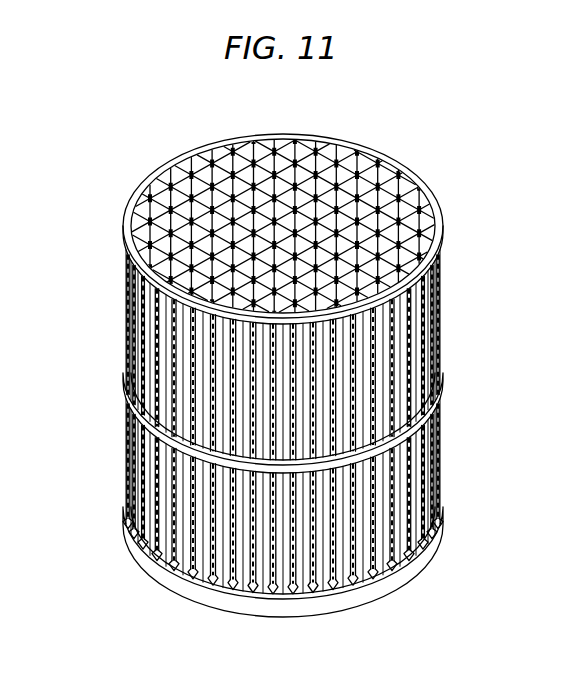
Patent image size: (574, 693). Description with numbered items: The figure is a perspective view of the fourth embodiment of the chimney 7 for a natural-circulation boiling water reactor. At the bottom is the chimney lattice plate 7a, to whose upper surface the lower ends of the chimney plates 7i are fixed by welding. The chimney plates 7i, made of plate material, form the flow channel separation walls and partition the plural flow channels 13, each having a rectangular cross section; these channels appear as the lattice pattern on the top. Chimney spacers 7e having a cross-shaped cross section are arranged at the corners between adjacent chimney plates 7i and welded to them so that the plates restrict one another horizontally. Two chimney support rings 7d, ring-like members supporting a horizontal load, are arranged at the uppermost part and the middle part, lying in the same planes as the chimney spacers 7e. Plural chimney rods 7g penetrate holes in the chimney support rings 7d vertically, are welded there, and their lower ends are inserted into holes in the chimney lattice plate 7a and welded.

The chimney 7 is at (460, 256).
The chimney lattice plate 7a is at (130, 542).
The chimney support ring 7d is at (127, 239).
The chimney spacer 7e is at (392, 242).
The chimney rod 7g is at (440, 327).
The chimney plate 7i is at (402, 535).
The flow channel 13 is at (382, 198).